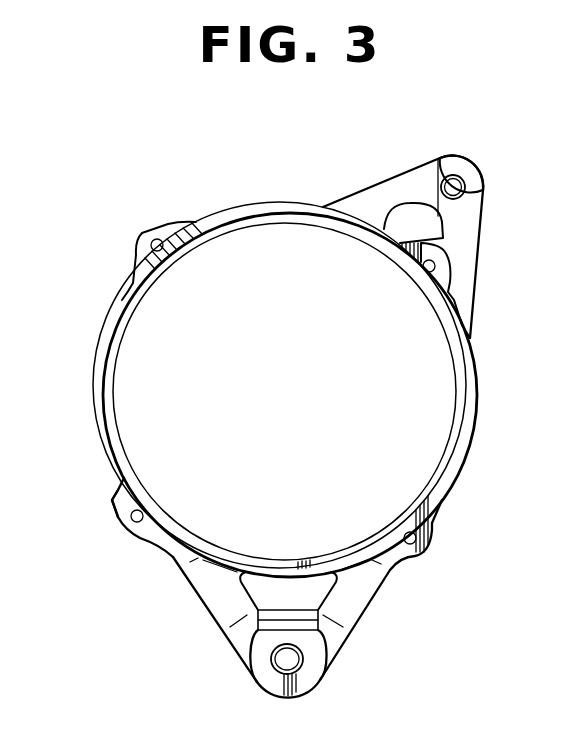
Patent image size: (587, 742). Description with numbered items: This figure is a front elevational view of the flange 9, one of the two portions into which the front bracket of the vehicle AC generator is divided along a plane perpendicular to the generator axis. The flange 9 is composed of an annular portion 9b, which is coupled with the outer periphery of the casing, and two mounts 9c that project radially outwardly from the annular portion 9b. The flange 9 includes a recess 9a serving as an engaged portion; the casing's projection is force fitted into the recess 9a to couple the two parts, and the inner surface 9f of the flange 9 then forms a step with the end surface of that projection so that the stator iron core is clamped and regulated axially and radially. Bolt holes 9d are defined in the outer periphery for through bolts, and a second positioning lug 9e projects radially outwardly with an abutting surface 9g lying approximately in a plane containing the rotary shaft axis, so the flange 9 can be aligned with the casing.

The flange 9 is at (272, 201).
The recess 9a is at (107, 453).
The annular portion 9b is at (106, 320).
The mounts 9c is at (401, 174).
The bolt holes 9d is at (152, 231).
The second positioning lug 9e is at (116, 510).
The inner surface 9f is at (119, 347).
The abutting surface 9g is at (112, 500).